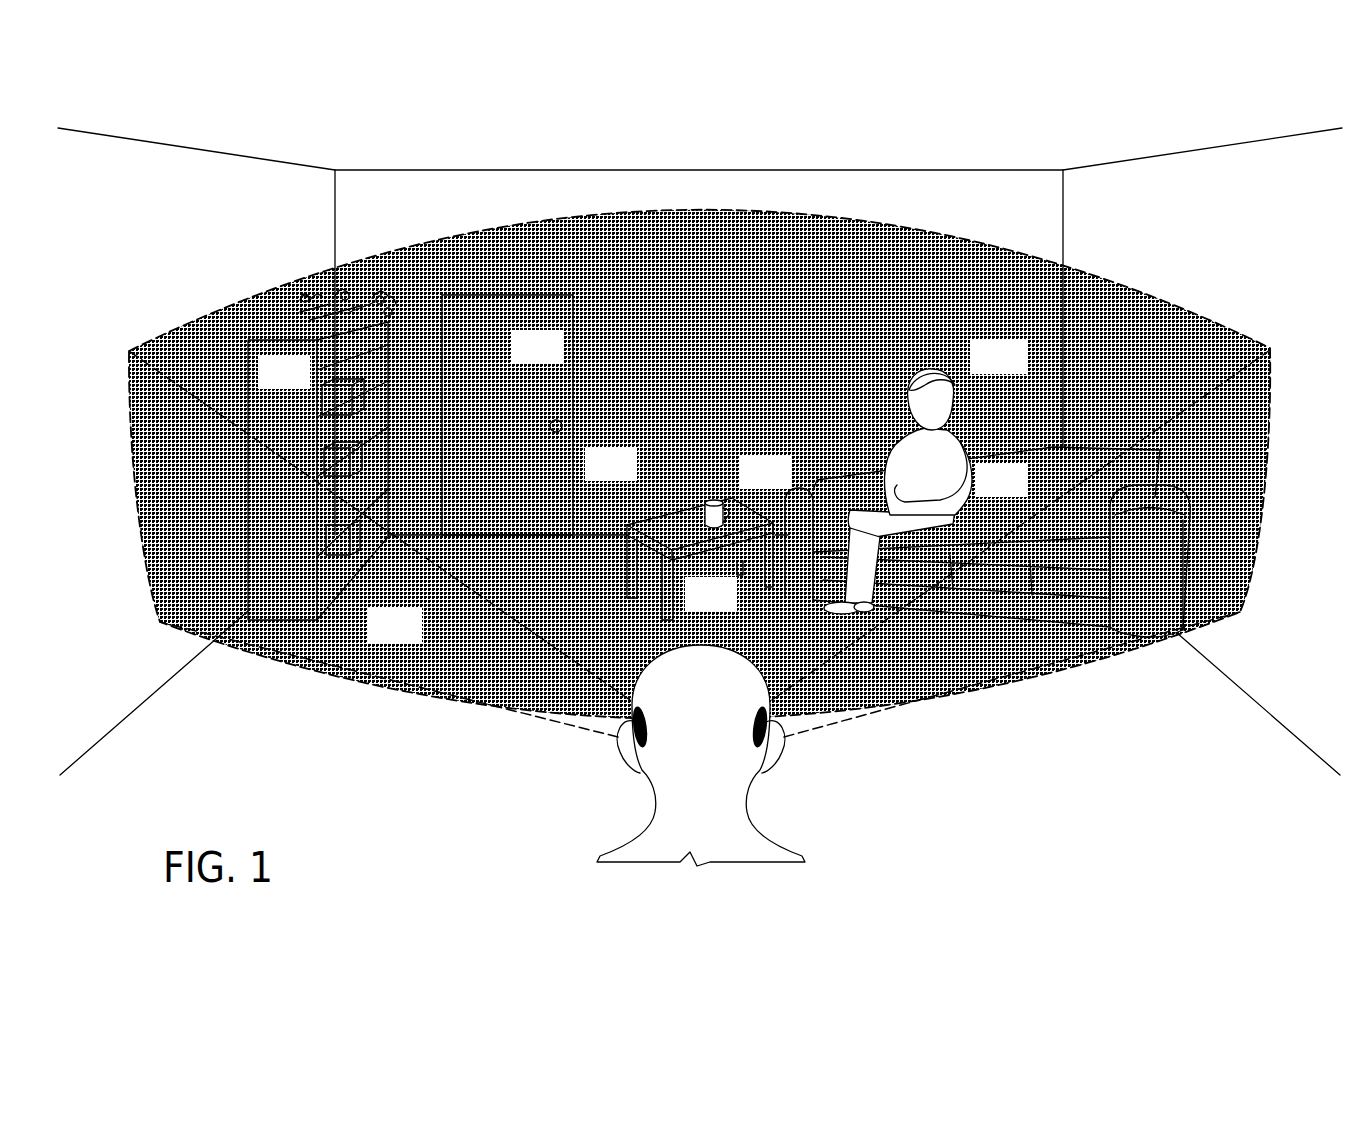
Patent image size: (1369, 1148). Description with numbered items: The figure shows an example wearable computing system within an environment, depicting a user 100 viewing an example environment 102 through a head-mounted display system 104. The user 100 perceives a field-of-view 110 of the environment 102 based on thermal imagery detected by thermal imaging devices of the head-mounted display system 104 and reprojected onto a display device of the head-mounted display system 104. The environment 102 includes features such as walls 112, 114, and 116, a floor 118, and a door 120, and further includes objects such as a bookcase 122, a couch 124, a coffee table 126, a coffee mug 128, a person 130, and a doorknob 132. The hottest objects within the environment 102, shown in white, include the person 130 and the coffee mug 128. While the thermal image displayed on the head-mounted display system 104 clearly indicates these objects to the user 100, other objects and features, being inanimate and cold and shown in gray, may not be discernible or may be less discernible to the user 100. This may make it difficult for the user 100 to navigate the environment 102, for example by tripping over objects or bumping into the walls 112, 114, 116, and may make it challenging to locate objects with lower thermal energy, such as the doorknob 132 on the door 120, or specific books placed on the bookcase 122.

The user 100 is at (681, 732).
The environment 102 is at (700, 445).
The head-mounted display system 104 is at (630, 772).
The field-of-view 110 is at (1088, 254).
The wall 112 is at (1093, 214).
The wall 114 is at (703, 201).
The wall 116 is at (283, 214).
The floor 118 is at (378, 638).
The door 120 is at (521, 359).
The bookcase 122 is at (266, 384).
The couch 124 is at (984, 491).
The coffee table 126 is at (700, 559).
The coffee mug 128 is at (716, 493).
The person 130 is at (942, 366).
The doorknob 132 is at (562, 428).